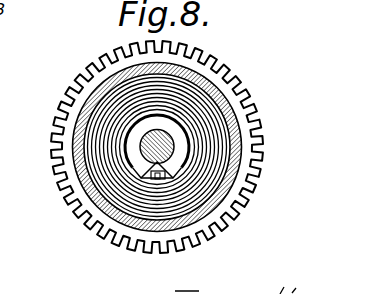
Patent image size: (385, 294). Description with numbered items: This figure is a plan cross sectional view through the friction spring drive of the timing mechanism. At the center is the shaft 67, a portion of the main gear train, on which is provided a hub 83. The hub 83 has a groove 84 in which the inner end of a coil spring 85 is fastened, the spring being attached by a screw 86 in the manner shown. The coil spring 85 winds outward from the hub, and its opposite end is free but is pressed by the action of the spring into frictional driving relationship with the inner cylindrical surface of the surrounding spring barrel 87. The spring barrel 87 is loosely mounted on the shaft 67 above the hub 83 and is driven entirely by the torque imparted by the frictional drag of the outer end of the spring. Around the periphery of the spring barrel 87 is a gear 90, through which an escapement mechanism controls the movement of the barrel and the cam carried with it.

The shaft 67 is at (168, 138).
The hub 83 is at (185, 134).
The groove 84 is at (133, 168).
The coil spring 85 is at (213, 142).
The screw 86 is at (162, 177).
The spring barrel 87 is at (234, 169).
The gear 90 is at (225, 202).